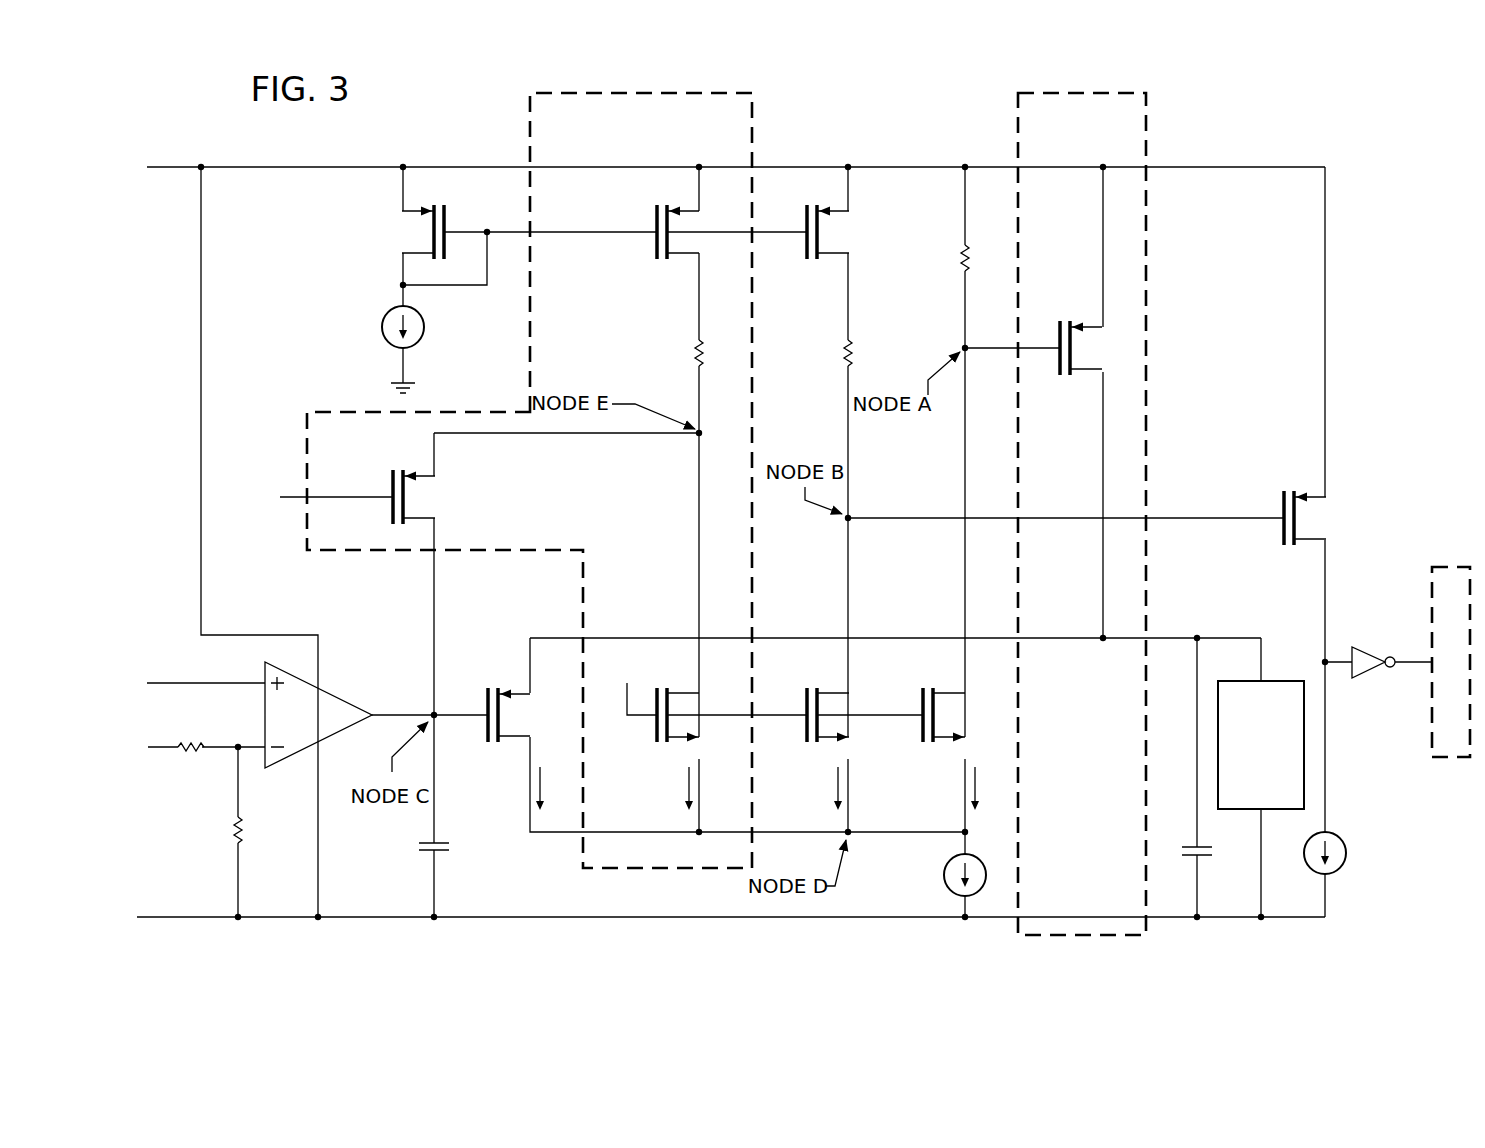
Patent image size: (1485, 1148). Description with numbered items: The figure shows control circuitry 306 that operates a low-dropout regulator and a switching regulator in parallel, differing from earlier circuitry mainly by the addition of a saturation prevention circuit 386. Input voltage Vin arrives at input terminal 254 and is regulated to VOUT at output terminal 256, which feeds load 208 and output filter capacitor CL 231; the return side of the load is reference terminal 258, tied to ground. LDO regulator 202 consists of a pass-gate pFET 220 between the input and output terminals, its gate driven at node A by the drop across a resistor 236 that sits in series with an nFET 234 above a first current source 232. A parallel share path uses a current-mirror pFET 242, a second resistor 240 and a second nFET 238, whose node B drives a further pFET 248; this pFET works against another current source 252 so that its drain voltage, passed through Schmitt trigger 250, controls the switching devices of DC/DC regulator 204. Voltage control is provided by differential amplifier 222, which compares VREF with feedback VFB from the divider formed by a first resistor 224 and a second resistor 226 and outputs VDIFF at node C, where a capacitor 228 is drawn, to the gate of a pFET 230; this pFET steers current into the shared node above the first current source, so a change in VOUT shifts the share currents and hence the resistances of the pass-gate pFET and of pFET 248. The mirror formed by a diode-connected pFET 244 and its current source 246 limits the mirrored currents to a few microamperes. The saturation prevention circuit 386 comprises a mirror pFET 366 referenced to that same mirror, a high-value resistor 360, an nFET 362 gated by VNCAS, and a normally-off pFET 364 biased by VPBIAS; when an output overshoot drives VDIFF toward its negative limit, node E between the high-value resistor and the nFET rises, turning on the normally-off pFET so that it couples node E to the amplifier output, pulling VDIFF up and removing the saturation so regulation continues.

The input terminal 254 is at (172, 166).
The reference terminal 258 is at (172, 916).
The saturation prevention circuit 386 is at (528, 123).
The LDO regulator 202 is at (1149, 124).
The DC/DC regulator 204 is at (1431, 602).
The control circuitry 306 is at (1342, 146).
The pFET MP4 244 is at (455, 224).
The current source I2 246 is at (382, 333).
The pFET MP6 366 is at (650, 223).
The resistor R5 360 is at (693, 353).
The pFET MP3 242 is at (805, 262).
The resistor R4 240 is at (843, 353).
The resistor R3 236 is at (960, 257).
The pFET MP1 220 is at (1064, 380).
The pFET MP7 364 is at (388, 490).
The differential amplifier 222 is at (340, 695).
The resistor R1 224 is at (190, 757).
The resistor R2 226 is at (232, 837).
The capacitor C1 228 is at (418, 848).
The pFET MP2 230 is at (487, 700).
The nFET MN3 362 is at (658, 742).
The nFET MN2 238 is at (806, 742).
The nFET MN1 234 is at (922, 742).
The current source I1 232 is at (944, 878).
The pFET MP5 248 is at (1280, 543).
The output terminal 256 is at (1195, 634).
The load 208 is at (1241, 777).
The output filter capacitor CL 231 is at (1213, 858).
The current source I5 252 is at (1347, 856).
The Schmitt trigger 250 is at (1372, 680).